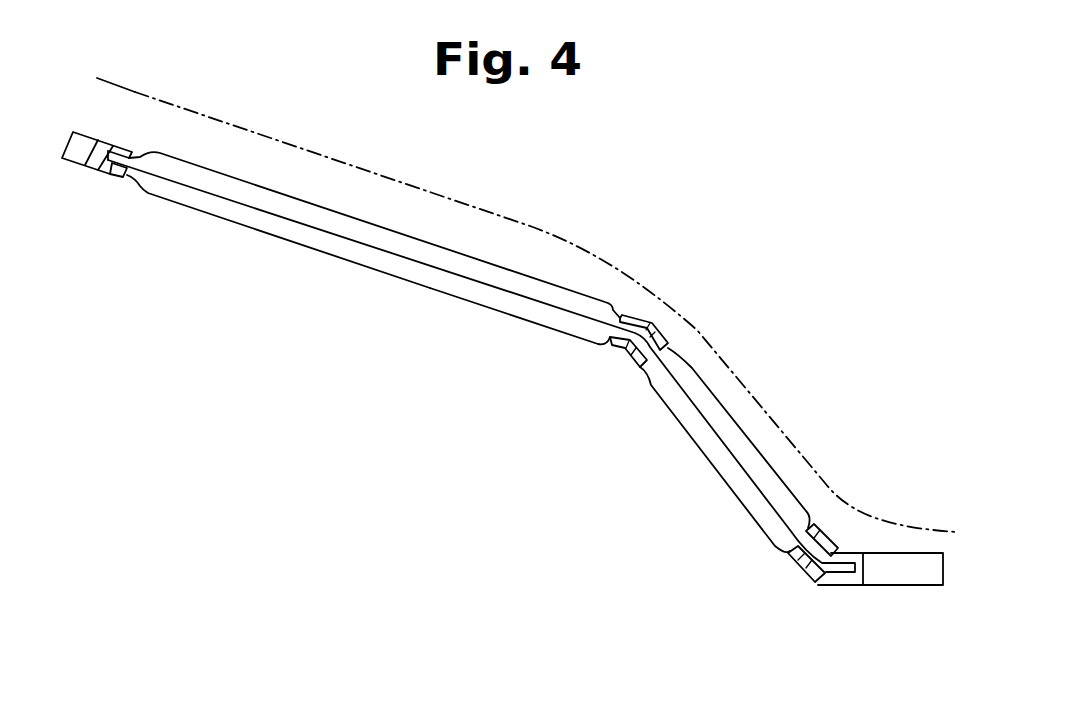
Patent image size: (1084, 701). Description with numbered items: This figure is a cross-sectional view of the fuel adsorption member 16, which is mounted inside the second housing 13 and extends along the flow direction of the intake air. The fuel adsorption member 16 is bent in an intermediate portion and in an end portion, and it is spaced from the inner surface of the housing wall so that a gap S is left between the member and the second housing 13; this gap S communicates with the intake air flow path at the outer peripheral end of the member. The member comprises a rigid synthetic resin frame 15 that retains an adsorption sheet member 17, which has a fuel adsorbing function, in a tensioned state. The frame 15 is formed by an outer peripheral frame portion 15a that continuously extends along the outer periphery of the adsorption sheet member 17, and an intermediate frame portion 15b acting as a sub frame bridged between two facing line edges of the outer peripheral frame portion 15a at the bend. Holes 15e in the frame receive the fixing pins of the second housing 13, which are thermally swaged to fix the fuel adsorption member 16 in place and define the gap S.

The second housing 13 is at (367, 170).
The gap S is at (569, 265).
The frame 15 is at (518, 391).
The outer peripheral frame portion 15a is at (78, 167).
The intermediate frame portion 15b is at (610, 350).
The holes 15e is at (913, 577).
The fuel adsorption member 16 is at (372, 269).
The adsorption sheet member 17 is at (480, 305).